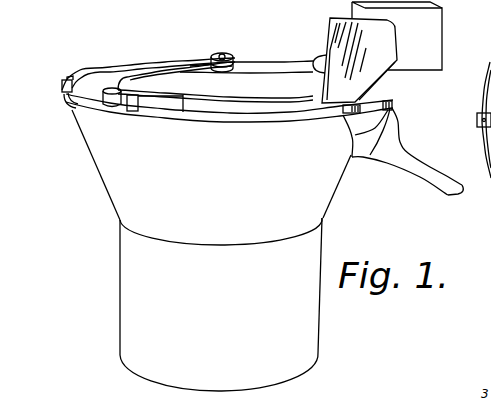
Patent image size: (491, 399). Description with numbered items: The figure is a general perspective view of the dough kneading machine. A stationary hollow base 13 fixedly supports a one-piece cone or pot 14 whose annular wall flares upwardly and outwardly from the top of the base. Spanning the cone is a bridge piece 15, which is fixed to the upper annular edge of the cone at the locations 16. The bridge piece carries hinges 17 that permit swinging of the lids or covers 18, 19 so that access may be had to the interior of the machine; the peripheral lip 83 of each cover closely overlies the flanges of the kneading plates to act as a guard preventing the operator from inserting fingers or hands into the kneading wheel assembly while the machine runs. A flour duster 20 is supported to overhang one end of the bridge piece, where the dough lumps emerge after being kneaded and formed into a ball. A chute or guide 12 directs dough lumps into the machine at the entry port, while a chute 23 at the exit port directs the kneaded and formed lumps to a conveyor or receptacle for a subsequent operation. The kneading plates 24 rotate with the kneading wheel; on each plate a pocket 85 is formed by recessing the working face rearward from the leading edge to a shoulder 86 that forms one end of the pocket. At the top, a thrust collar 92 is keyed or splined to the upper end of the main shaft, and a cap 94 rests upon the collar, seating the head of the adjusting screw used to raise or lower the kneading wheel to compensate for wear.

The chute or guide 12 is at (340, 42).
The stationary hollow base 13 is at (126, 316).
The cone or pot 14 is at (108, 170).
The bridge piece 15 is at (111, 66).
The locations 16 is at (66, 78).
The hinges 17 is at (166, 71).
The lid or cover 18 is at (178, 83).
The lid or cover 19 is at (199, 66).
The flour duster 20 is at (437, 35).
The chute 23 is at (420, 175).
The kneading plates 24 is at (100, 105).
The peripheral lip 83 is at (70, 101).
The pocket 85 is at (152, 110).
The shoulder 86 is at (182, 118).
The thrust collar 92 is at (206, 55).
The cap 94 is at (232, 55).